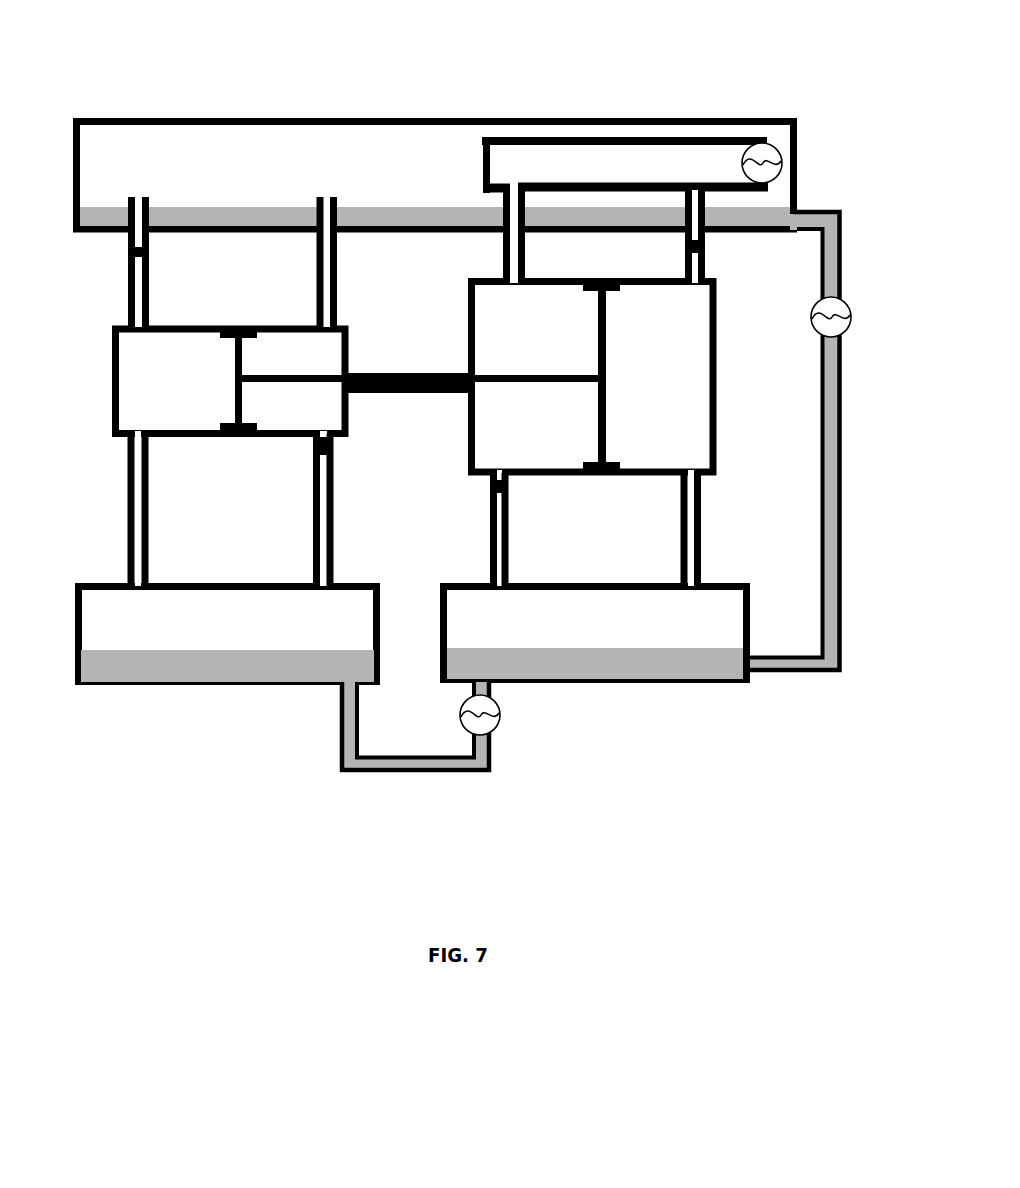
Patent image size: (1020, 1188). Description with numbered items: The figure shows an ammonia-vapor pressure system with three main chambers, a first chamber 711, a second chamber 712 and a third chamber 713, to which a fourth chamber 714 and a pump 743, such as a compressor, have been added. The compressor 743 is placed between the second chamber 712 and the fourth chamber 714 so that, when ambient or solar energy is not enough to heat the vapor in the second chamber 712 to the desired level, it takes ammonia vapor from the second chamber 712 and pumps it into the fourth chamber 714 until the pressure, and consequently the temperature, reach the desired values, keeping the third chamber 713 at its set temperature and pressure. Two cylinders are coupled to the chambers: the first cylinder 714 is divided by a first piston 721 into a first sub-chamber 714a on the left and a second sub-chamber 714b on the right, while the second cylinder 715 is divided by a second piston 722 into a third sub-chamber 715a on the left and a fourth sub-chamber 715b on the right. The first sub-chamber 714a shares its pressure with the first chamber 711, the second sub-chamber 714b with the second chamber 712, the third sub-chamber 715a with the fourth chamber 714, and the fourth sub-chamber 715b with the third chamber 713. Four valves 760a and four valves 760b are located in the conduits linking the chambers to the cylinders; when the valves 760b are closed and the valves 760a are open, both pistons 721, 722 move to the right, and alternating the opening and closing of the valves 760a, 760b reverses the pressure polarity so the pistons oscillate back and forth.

The first chamber 711 is at (119, 699).
The second chamber 712 is at (274, 92).
The third chamber 713 is at (682, 698).
The fourth chamber 714 is at (527, 165).
The first sub-chamber 714a is at (197, 423).
The second sub-chamber 714b is at (316, 417).
The cylinder 715 is at (567, 498).
The third sub-chamber 715a is at (560, 441).
The fourth sub-chamber 715b is at (686, 441).
The first piston 721 is at (228, 357).
The second piston 722 is at (583, 318).
The pump 743 is at (766, 162).
The valves 760a is at (500, 242).
The valves 760b is at (133, 252).